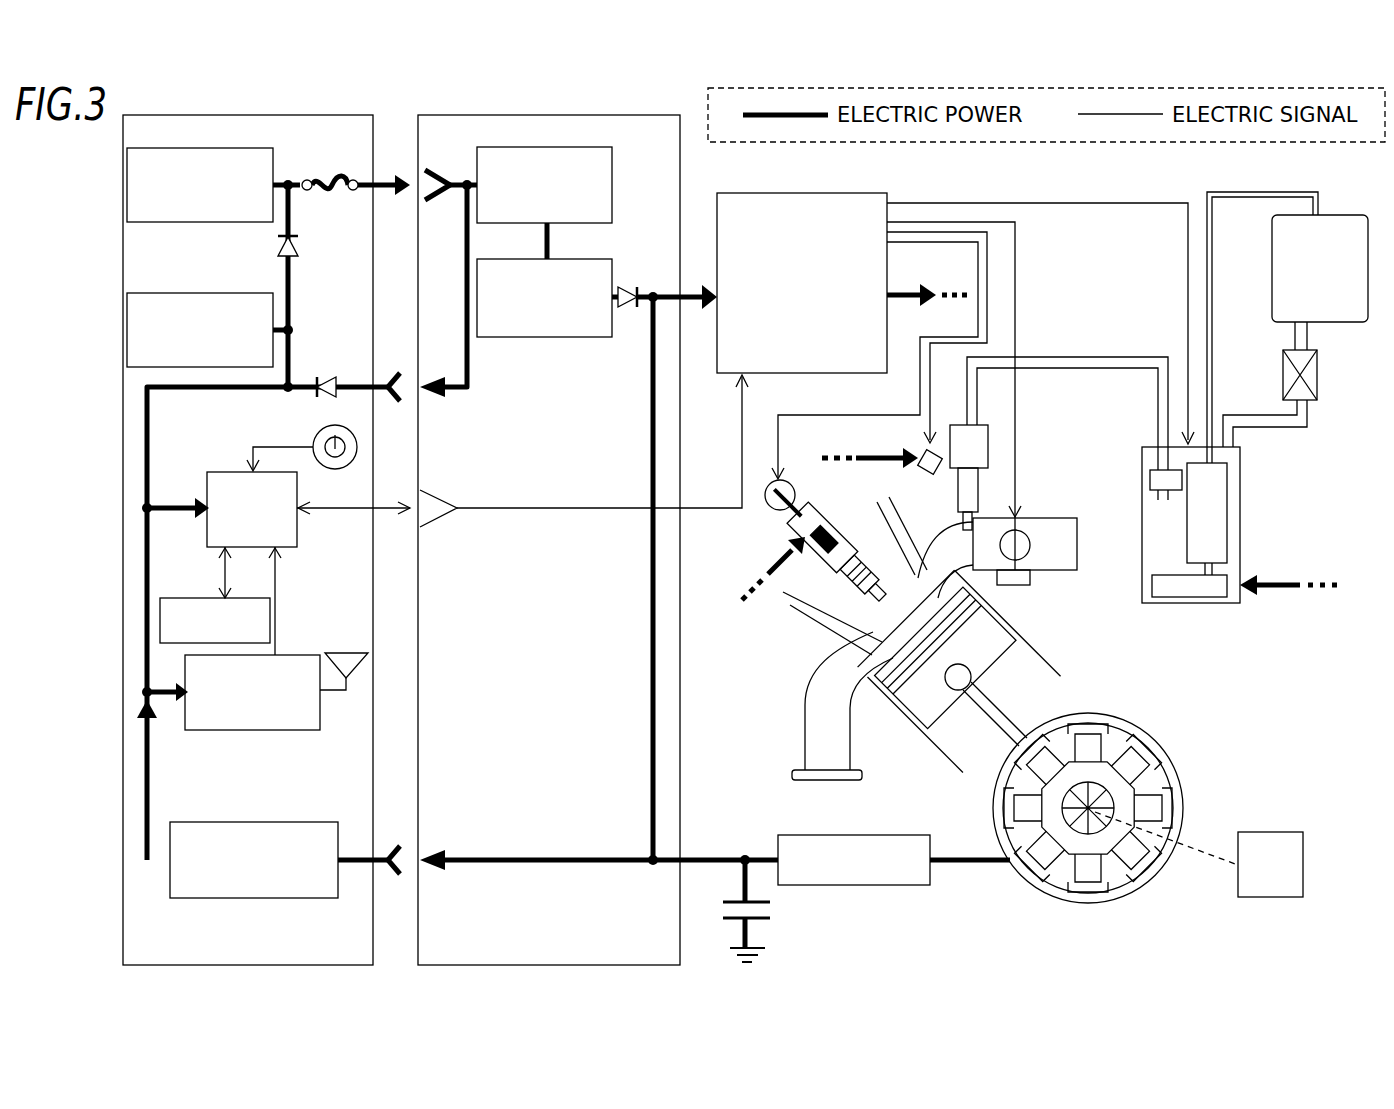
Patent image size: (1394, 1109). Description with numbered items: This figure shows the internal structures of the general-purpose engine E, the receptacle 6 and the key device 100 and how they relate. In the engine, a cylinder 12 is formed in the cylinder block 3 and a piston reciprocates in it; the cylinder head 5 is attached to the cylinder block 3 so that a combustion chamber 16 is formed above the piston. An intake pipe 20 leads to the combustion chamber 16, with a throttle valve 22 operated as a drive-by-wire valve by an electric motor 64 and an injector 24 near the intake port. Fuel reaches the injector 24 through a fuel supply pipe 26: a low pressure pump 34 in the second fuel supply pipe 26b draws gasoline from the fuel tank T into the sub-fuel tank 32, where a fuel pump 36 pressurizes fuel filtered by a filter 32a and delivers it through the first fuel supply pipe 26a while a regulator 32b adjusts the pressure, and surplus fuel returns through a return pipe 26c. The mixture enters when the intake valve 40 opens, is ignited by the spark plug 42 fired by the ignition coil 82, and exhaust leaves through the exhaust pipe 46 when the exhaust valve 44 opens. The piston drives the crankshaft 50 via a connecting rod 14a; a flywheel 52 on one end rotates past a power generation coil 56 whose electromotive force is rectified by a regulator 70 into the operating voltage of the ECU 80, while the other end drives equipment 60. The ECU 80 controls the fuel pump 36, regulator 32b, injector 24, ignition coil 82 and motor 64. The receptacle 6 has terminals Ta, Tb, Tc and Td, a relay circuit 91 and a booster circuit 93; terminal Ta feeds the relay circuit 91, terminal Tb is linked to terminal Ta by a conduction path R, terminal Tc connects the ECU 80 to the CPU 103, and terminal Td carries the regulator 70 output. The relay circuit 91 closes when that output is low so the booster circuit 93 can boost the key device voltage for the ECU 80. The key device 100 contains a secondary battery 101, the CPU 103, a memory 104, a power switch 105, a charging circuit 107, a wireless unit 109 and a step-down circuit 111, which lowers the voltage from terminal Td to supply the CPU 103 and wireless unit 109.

The cylinder block 3 is at (890, 690).
The cylinder head 5 is at (860, 625).
The receptacle 6 is at (598, 540).
The cylinder 12 is at (969, 666).
The connecting rod 14a is at (967, 716).
The combustion chamber 16 is at (832, 699).
The intake pipe 20 is at (1018, 530).
The throttle valve 22 is at (1030, 547).
The injector 24 is at (950, 495).
The fuel supply pipe 26 is at (1142, 311).
The first fuel supply pipe 26a is at (1143, 357).
The second fuel supply pipe 26b is at (1290, 342).
The return pipe 26c is at (1207, 192).
The sub-fuel tank 32 is at (1213, 544).
The filter 32a is at (1165, 600).
The regulator 32b is at (1150, 478).
The low pressure pump 34 is at (1283, 372).
The fuel pump 36 is at (1227, 525).
The intake valve 40 is at (806, 560).
The spark plug 42 is at (911, 547).
The exhaust valve 44 is at (822, 633).
The exhaust pipe 46 is at (805, 732).
The crankshaft 50 is at (1098, 864).
The flywheel 52 is at (1087, 829).
The power generation coil 56 is at (1119, 808).
The equipment 60 is at (1199, 854).
The electric motor 64 is at (1005, 565).
The regulator 70 is at (845, 885).
The ECU 80 is at (835, 193).
The ignition coil 82 is at (768, 522).
The relay circuit 91 is at (612, 185).
The booster circuit 93 is at (572, 337).
The key device 100 is at (266, 540).
The secondary battery 101 is at (278, 170).
The CPU 103 is at (222, 472).
The memory 104 is at (200, 598).
The power switch 105 is at (313, 447).
The charging circuit 107 is at (203, 292).
The wireless unit 109 is at (265, 730).
The step-down circuit 111 is at (248, 822).
The fuel tank T is at (1352, 215).
The general-purpose engine E is at (1170, 668).
The conduction path R is at (467, 360).
The terminal Ta is at (440, 158).
The terminal Tb is at (442, 420).
The terminal Tc is at (440, 546).
The terminal Td is at (442, 828).